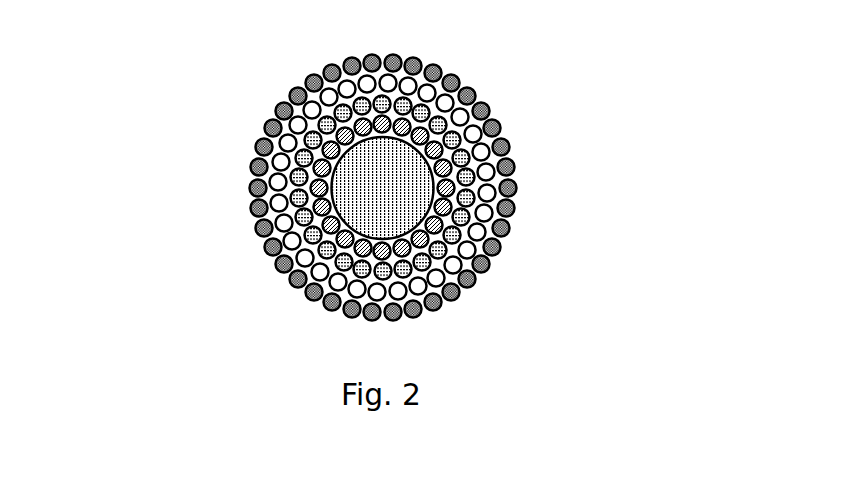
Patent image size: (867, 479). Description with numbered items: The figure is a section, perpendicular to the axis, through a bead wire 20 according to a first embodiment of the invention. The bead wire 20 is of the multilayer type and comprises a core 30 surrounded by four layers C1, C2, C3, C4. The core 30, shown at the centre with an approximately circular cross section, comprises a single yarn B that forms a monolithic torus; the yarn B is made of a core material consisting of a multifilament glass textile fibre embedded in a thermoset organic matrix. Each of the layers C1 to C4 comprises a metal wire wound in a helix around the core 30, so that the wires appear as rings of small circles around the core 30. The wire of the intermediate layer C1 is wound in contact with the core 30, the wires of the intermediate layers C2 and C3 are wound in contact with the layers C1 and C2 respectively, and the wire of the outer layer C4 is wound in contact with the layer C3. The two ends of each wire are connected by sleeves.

The bead wire 20 is at (381, 165).
The core 30 is at (462, 130).
The yarn B is at (389, 144).
The intermediate layer C1 is at (102, 124).
The intermediate layer C2 is at (102, 159).
The intermediate layer C3 is at (102, 197).
The outer layer C4 is at (102, 233).